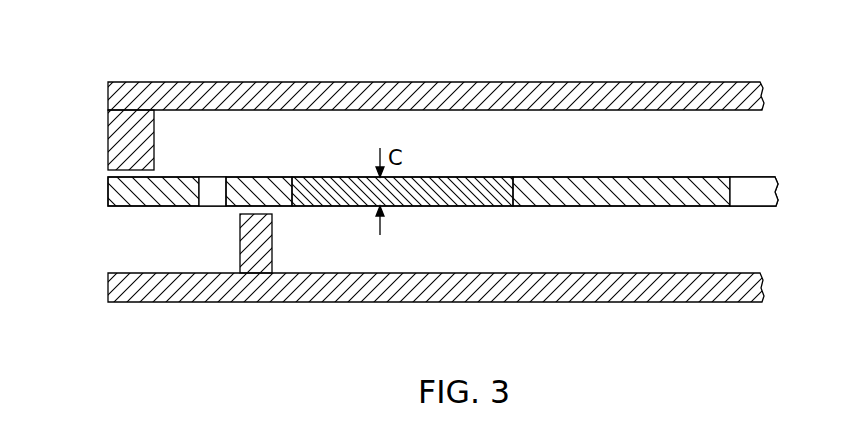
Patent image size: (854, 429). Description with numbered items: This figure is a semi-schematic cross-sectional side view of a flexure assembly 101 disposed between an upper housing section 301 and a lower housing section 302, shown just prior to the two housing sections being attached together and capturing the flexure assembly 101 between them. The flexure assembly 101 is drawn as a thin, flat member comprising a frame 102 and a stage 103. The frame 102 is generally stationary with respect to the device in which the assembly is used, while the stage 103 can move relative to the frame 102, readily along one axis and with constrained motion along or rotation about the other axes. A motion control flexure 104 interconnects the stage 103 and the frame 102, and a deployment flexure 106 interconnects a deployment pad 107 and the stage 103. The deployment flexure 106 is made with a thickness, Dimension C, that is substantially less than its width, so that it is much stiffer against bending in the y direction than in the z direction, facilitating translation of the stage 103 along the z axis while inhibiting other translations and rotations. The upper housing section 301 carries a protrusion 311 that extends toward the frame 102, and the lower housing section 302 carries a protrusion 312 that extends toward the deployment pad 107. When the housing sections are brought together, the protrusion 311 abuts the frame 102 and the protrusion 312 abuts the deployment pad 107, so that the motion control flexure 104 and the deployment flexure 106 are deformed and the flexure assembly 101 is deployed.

The flexure assembly 101 is at (755, 178).
The frame 102 is at (410, 194).
The stage 103 is at (635, 178).
The motion control flexure 104 is at (208, 206).
The deployment flexure 106 is at (470, 177).
The deployment pad 107 is at (252, 177).
The upper housing section 301 is at (480, 82).
The lower housing section 302 is at (372, 302).
The protrusion of the upper housing section 311 is at (108, 121).
The protrusion of the lower housing section 312 is at (272, 244).